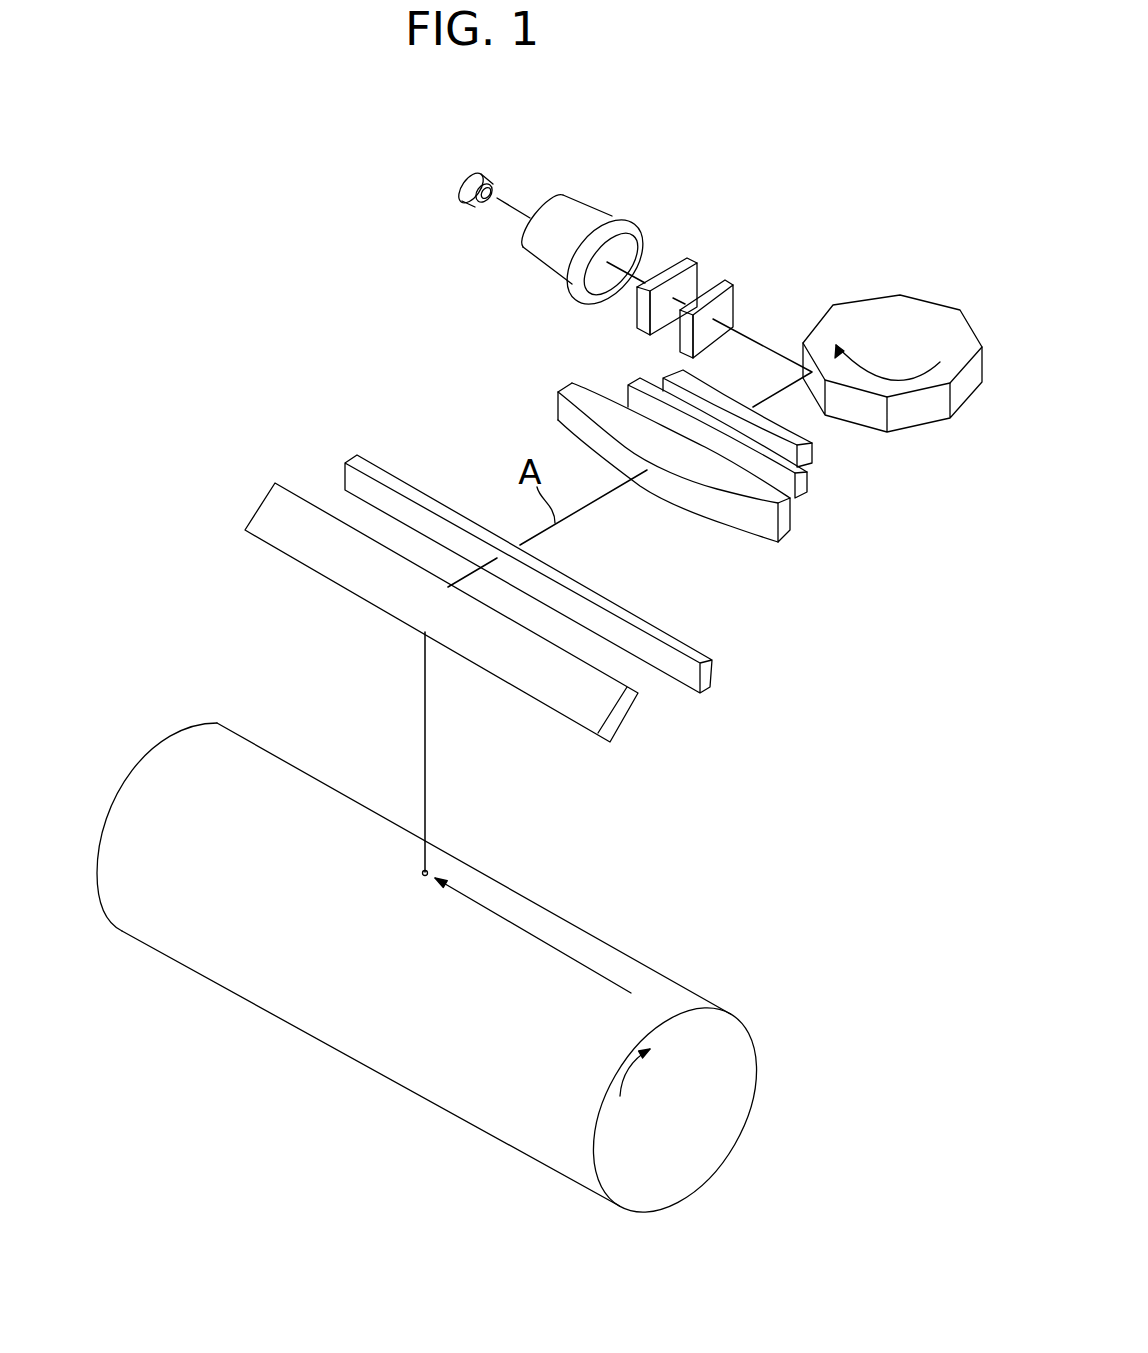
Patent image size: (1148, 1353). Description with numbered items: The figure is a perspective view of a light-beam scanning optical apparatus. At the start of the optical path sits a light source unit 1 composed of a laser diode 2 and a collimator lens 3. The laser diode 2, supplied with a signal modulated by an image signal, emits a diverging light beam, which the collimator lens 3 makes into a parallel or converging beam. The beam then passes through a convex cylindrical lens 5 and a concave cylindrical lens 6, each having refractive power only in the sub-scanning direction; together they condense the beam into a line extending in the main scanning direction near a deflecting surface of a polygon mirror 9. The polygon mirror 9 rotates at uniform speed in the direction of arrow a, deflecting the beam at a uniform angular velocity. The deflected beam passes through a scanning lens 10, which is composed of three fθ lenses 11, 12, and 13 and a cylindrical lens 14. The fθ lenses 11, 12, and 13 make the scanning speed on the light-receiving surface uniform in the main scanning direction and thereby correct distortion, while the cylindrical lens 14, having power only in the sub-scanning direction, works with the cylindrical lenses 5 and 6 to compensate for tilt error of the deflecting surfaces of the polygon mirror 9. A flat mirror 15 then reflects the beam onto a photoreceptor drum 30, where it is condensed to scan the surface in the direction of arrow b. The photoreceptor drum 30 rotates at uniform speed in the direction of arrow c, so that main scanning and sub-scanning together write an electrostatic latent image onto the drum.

The light source unit 1 is at (586, 321).
The laser diode 2 is at (472, 168).
The collimator lens 3 is at (573, 217).
The cylindrical lens 5 is at (683, 280).
The cylindrical lens 6 is at (720, 307).
The polygon mirror 9 is at (910, 310).
The scanning lens 10 is at (793, 732).
The fθ lens 11 is at (803, 460).
The fθ lens 12 is at (803, 492).
The fθ lens 13 is at (787, 527).
The cylindrical lens 14 is at (712, 670).
The flat mirror 15 is at (618, 710).
The photoreceptor drum 30 is at (661, 986).